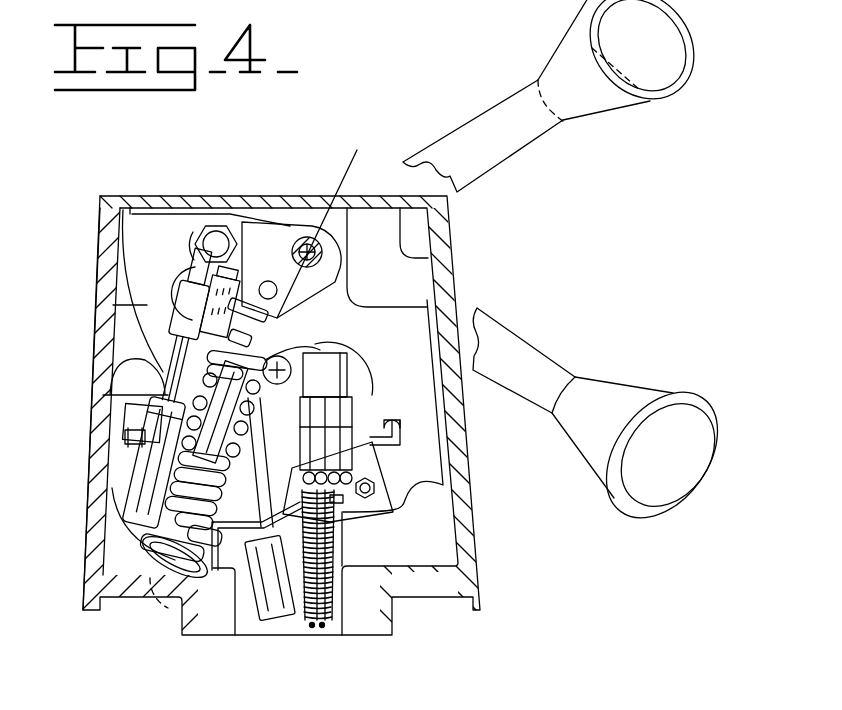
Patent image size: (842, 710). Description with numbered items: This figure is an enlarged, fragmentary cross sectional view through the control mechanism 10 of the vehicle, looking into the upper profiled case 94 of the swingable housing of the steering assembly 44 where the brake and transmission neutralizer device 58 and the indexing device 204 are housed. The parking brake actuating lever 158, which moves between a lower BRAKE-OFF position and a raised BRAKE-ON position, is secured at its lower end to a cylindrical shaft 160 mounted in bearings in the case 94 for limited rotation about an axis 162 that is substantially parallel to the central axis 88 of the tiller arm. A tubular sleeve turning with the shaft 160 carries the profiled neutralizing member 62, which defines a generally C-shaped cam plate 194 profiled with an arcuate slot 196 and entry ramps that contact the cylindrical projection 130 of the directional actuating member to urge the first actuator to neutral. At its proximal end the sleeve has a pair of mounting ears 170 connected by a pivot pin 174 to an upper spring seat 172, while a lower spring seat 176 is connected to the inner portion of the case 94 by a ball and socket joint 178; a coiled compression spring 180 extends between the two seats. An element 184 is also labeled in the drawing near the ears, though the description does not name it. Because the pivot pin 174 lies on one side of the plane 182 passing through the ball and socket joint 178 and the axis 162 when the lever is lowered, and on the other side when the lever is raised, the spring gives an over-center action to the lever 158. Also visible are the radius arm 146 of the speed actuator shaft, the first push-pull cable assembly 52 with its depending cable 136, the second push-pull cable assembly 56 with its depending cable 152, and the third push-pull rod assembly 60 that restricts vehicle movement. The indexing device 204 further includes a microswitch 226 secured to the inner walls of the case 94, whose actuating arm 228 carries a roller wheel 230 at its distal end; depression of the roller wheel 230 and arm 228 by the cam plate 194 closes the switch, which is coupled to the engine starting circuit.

The control mechanism 10 is at (103, 190).
The steering assembly 44 is at (98, 403).
The upper profiled case 94 is at (100, 268).
The profiled neutralizing member 62 is at (144, 333).
The arcuate slot 196 is at (157, 275).
The indexing device 204 is at (115, 354).
The pivot arm 184 is at (198, 236).
The cam plate 194 is at (164, 268).
The mounting ears 170 is at (285, 250).
The cylindrical shaft 160 is at (316, 250).
The axis 162 is at (320, 258).
The plane 182 is at (333, 162).
The pivot pin 174 is at (276, 258).
The upper spring seat 172 is at (280, 324).
The radius arm 146 is at (297, 352).
The coiled compression spring 180 is at (170, 475).
The first push-pull cable assembly 52 is at (322, 630).
The central axis 88 is at (325, 375).
The cylindrical projection 130 is at (368, 352).
The depending cable 152 is at (331, 582).
The second push-pull cable assembly 56 is at (313, 630).
The third push-pull rod assembly 60 is at (265, 612).
The microswitch 226 is at (358, 503).
The depending cable 136 is at (335, 525).
The actuating arm 228 is at (386, 443).
The roller wheel 230 is at (390, 420).
The lower spring seat 176 is at (148, 546).
The ball and socket joint 178 is at (166, 604).
The parking brake actuating lever 158 is at (523, 348).
The brake and transmission neutralizer device 58 is at (584, 465).